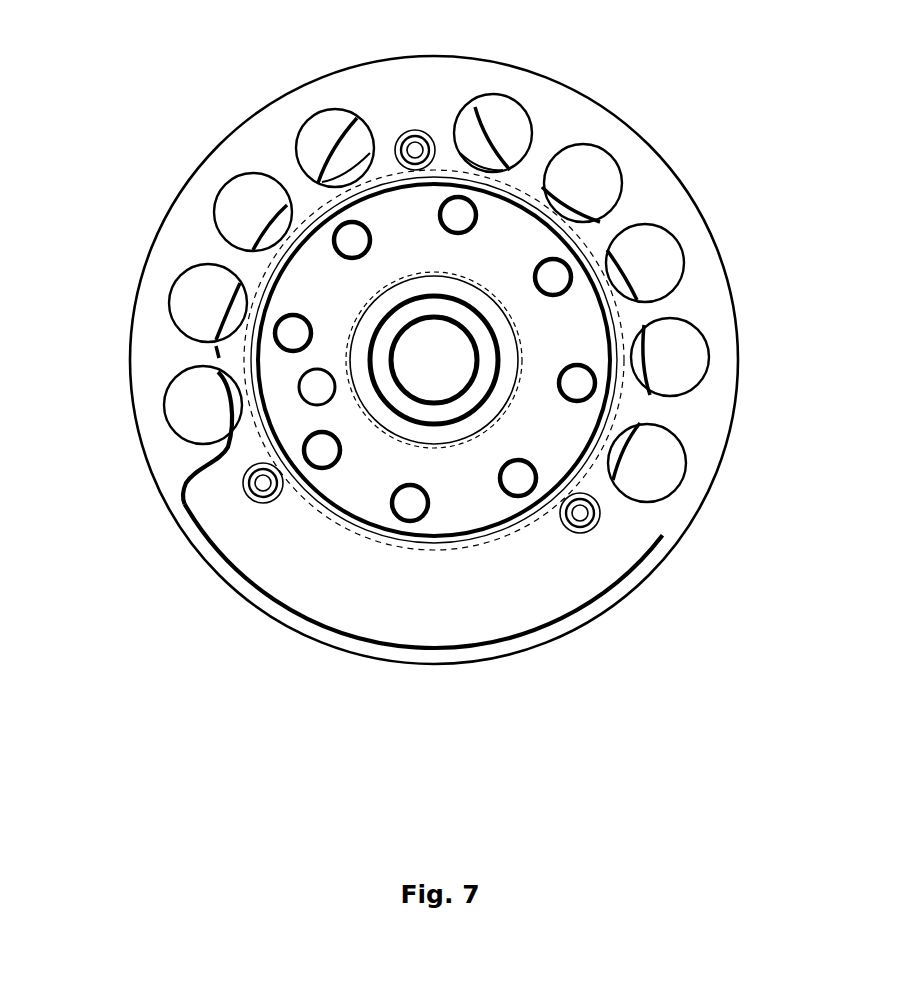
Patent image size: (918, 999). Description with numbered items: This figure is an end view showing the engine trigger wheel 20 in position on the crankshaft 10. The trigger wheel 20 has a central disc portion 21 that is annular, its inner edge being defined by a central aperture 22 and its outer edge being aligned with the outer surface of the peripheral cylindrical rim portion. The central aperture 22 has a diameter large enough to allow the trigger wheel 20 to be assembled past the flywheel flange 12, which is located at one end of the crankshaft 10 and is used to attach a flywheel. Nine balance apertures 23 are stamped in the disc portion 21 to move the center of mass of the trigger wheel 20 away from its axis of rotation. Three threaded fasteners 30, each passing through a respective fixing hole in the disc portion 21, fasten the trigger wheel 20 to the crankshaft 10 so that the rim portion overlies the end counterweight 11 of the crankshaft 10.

The crankshaft 10 is at (330, 143).
The end counterweight 11 is at (247, 593).
The flywheel flange 12 is at (437, 540).
The engine trigger wheel 20 is at (250, 113).
The central disc portion 21 is at (167, 347).
The central aperture 22 is at (353, 487).
The balance apertures 23 is at (317, 117).
The threaded fasteners 30 is at (415, 133).